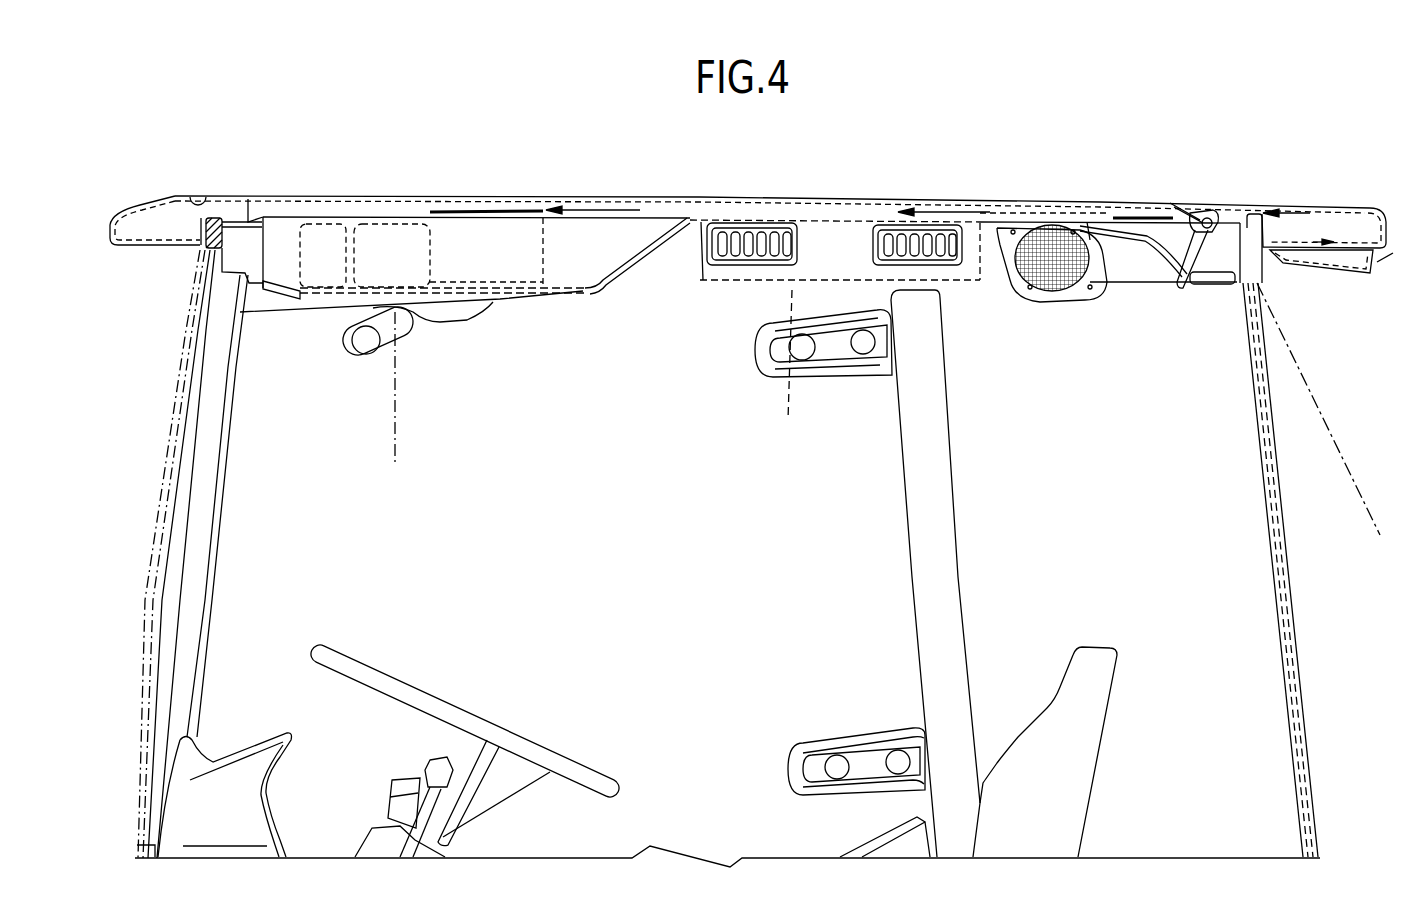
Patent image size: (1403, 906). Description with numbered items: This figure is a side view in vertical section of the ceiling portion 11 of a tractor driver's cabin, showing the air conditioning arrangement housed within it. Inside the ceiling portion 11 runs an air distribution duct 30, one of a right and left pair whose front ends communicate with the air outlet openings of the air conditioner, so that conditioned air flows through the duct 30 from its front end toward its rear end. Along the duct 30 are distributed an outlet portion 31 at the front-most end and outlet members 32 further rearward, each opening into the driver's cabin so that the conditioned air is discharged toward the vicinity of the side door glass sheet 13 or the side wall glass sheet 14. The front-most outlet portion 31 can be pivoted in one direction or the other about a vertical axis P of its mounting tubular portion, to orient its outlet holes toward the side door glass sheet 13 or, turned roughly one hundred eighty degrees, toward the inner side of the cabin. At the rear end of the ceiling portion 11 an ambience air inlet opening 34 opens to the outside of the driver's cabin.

The ceiling portion 11 is at (320, 196).
The side door glass sheet 13 is at (313, 589).
The side wall glass sheet 14 is at (1220, 610).
The air distribution duct 30 is at (996, 336).
The outlet portion 31 is at (367, 338).
The outlet member 32 is at (731, 268).
The ambience air inlet opening 34 is at (1377, 277).
The axis P is at (392, 412).